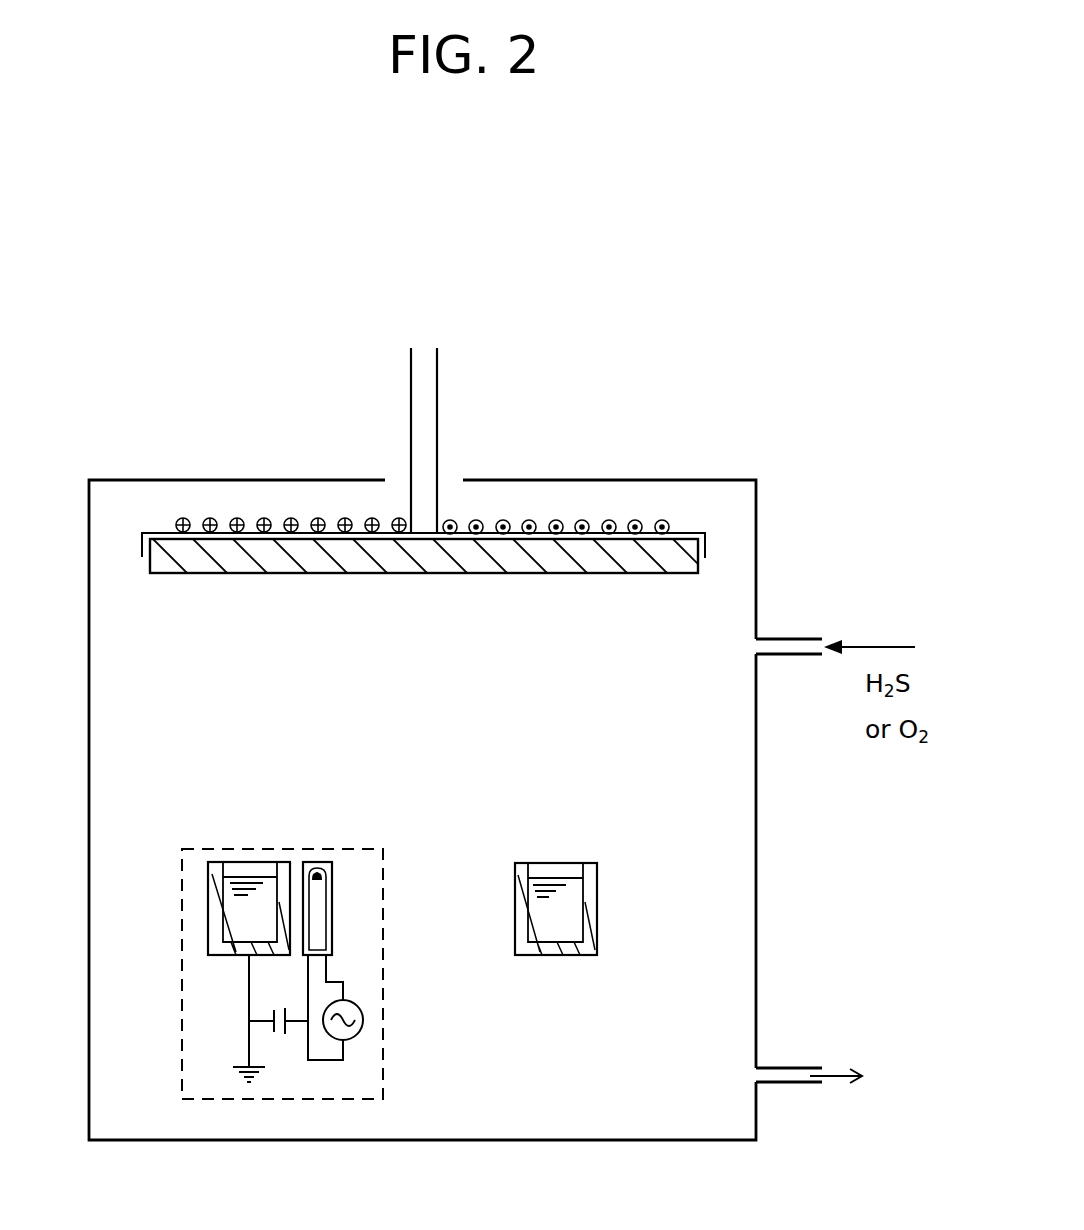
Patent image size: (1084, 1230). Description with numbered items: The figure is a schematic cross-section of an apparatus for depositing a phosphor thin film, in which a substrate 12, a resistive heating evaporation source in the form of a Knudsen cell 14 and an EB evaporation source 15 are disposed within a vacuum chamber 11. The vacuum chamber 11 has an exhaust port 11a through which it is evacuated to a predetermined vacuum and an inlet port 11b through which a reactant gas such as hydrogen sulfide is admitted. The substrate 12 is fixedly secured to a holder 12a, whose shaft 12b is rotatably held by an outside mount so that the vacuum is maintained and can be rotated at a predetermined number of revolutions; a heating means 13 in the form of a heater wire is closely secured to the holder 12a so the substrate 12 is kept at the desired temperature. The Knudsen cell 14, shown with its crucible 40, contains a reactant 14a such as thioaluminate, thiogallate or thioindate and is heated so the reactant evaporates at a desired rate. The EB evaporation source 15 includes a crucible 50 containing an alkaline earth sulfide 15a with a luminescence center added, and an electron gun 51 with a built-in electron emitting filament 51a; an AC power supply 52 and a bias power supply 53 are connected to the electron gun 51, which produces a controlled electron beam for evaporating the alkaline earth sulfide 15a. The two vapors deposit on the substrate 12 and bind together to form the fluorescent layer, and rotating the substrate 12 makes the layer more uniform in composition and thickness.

The vacuum chamber 11 is at (658, 480).
The exhaust port 11a is at (780, 1082).
The inlet port 11b is at (785, 639).
The substrate 12 is at (467, 573).
The holder 12a is at (705, 545).
The shaft 12b is at (437, 410).
The heating means 13 is at (536, 520).
The Knudsen cell 14 is at (565, 850).
The reactant 14a is at (530, 887).
The EB evaporation source 15 is at (258, 850).
The alkaline earth sulfide 15a is at (228, 893).
The crucible 40 is at (520, 955).
The crucible 50 is at (215, 950).
The electron gun 51 is at (325, 868).
The electron emitting filament 51a is at (326, 882).
The AC power supply 52 is at (363, 1020).
The bias power supply 53 is at (290, 1035).